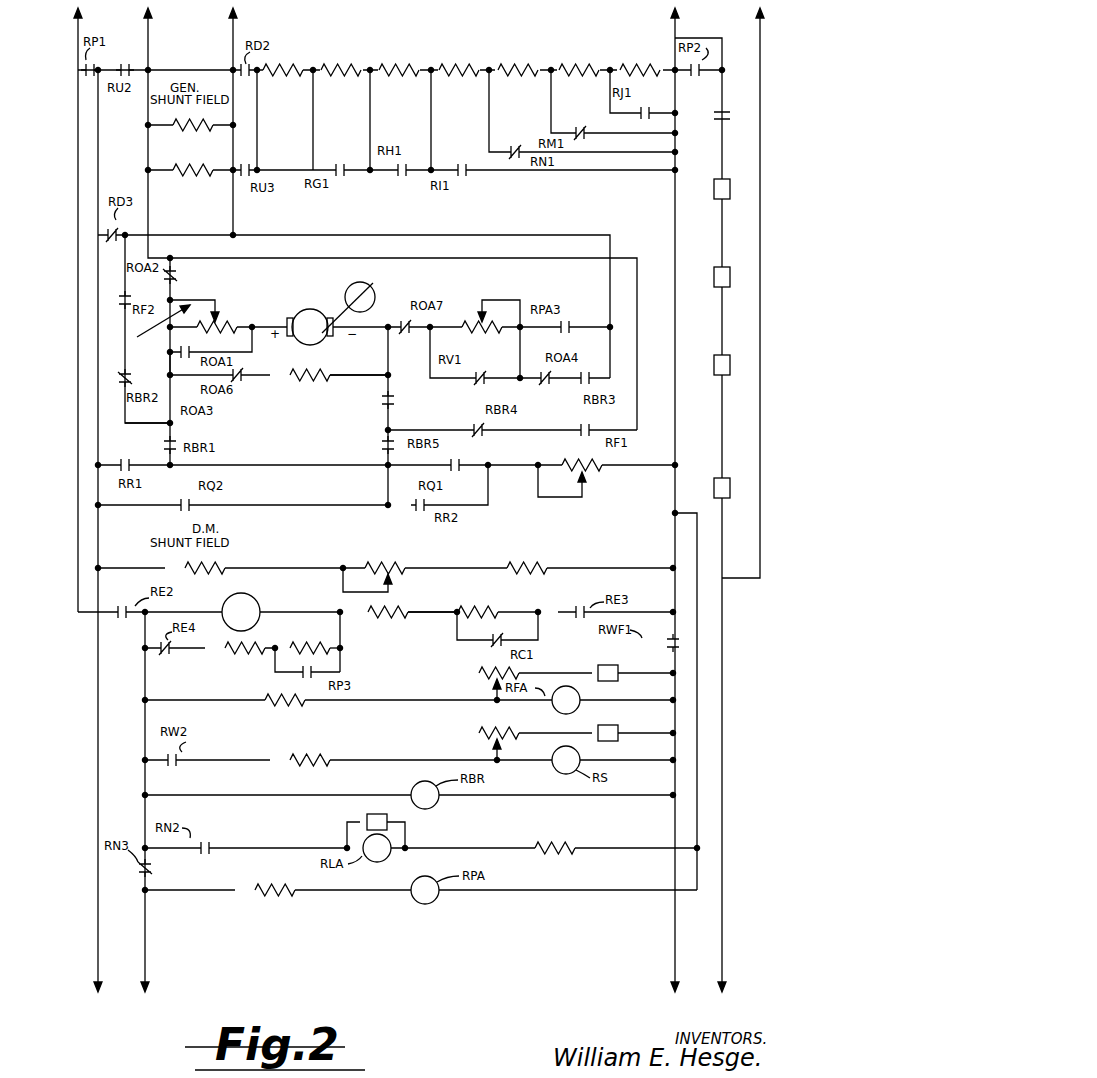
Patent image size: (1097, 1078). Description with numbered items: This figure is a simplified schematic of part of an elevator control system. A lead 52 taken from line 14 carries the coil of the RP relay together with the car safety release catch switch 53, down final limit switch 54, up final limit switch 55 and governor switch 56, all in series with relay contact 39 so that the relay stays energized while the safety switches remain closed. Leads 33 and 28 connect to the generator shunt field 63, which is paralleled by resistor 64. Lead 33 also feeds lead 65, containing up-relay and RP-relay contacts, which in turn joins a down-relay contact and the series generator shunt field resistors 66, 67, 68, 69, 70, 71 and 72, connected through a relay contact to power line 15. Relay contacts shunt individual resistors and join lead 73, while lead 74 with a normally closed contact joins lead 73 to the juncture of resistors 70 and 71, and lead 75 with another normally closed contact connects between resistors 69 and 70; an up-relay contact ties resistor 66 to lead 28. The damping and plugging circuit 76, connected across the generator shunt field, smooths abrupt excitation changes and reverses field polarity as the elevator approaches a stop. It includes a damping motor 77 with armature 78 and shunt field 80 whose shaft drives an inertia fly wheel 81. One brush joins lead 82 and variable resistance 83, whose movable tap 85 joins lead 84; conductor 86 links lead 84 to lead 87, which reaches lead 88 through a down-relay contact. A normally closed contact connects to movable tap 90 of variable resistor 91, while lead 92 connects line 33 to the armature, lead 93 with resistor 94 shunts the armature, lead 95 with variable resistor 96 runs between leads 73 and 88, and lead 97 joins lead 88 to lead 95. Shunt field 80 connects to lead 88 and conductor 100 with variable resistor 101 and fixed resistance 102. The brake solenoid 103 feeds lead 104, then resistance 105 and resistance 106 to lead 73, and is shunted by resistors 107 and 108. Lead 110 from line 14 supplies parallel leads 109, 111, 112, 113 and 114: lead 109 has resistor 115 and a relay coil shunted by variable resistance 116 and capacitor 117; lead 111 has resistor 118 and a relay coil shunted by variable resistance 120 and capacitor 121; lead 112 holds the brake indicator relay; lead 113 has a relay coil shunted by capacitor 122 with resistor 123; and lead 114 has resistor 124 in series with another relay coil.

The line 14 is at (80, 22).
The power line 15 is at (674, 26).
The lead 28 is at (236, 24).
The lead 33 is at (150, 28).
The relay contact 39 is at (722, 110).
The lead 52 is at (762, 26).
The car safety release catch switch 53 is at (730, 485).
The down final limit switch 54 is at (730, 363).
The up final limit switch 55 is at (730, 275).
The governor switch 56 is at (730, 185).
The generator shunt field 63 is at (200, 120).
The resistor 64 is at (195, 174).
The lead 65 is at (127, 64).
The generator shunt field resistor 66 is at (290, 64).
The generator shunt field resistor 67 is at (352, 64).
The generator shunt field resistor 68 is at (399, 64).
The generator shunt field resistor 69 is at (460, 64).
The generator shunt field resistor 70 is at (523, 64).
The generator shunt field resistor 71 is at (578, 62).
The generator shunt field resistor 72 is at (638, 62).
The lead 73 is at (674, 200).
The lead 74 is at (618, 142).
The lead 75 is at (489, 120).
The damping and plugging circuit 76 is at (156, 338).
The damping motor 77 is at (330, 298).
The armature 78 is at (345, 327).
The shunt field 80 is at (230, 564).
The inertia fly wheel 81 is at (369, 285).
The lead 82 is at (265, 318).
The variable resistance 83 is at (225, 332).
The lead 84 is at (156, 367).
The movable tap 85 is at (203, 304).
The conductor 86 is at (152, 426).
The lead 87 is at (168, 236).
The lead 88 is at (98, 180).
The movable tap 90 is at (510, 300).
The variable resistor 91 is at (480, 335).
The lead 92 is at (382, 410).
The lead 93 is at (366, 370).
The resistor 94 is at (322, 382).
The lead 95 is at (316, 464).
The variable resistor 96 is at (576, 462).
The lead 97 is at (332, 498).
The conductor 100 is at (346, 568).
The variable resistor 101 is at (395, 570).
The fixed resistance 102 is at (538, 570).
The brake solenoid 103 is at (262, 604).
The lead 104 is at (428, 613).
The fixed resistance 105 is at (392, 616).
The resistance 106 is at (502, 608).
The resistor 107 is at (245, 655).
The resistor 108 is at (294, 648).
The lead 109 is at (244, 700).
The lead 110 is at (145, 712).
The lead 111 is at (238, 755).
The lead 112 is at (225, 792).
The lead 113 is at (256, 842).
The lead 114 is at (352, 895).
The resistor 115 is at (300, 706).
The variable resistance 116 is at (481, 674).
The capacitor 117 is at (604, 663).
The resistor 118 is at (318, 752).
The variable resistance 120 is at (496, 728).
The capacitor 121 is at (604, 724).
The capacitor 122 is at (372, 814).
The resistor 123 is at (568, 842).
The resistor 124 is at (276, 895).